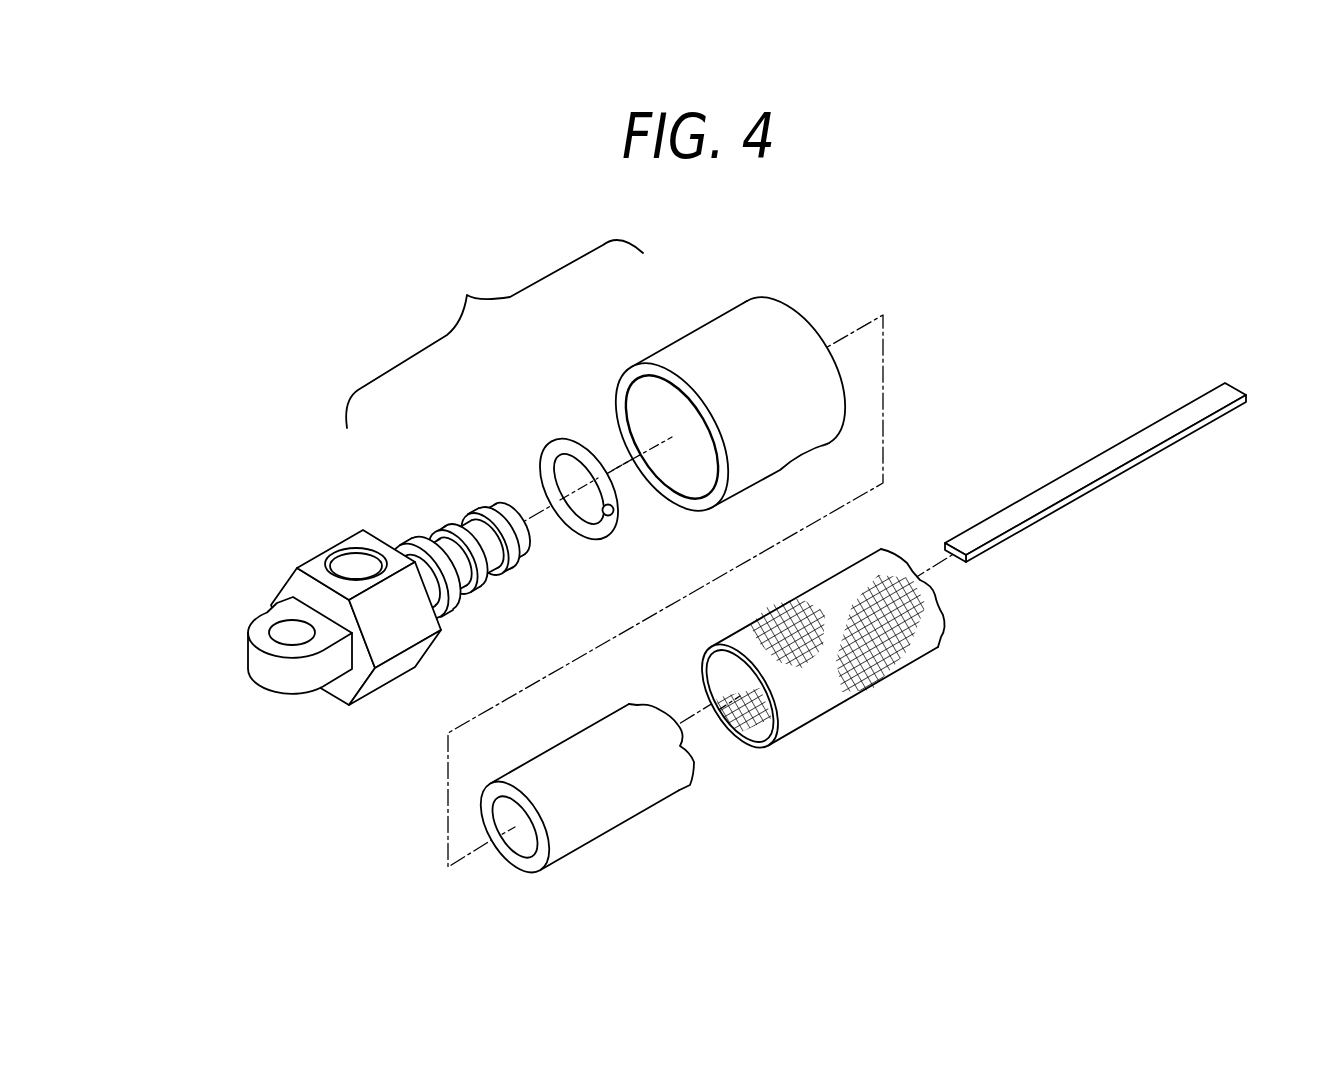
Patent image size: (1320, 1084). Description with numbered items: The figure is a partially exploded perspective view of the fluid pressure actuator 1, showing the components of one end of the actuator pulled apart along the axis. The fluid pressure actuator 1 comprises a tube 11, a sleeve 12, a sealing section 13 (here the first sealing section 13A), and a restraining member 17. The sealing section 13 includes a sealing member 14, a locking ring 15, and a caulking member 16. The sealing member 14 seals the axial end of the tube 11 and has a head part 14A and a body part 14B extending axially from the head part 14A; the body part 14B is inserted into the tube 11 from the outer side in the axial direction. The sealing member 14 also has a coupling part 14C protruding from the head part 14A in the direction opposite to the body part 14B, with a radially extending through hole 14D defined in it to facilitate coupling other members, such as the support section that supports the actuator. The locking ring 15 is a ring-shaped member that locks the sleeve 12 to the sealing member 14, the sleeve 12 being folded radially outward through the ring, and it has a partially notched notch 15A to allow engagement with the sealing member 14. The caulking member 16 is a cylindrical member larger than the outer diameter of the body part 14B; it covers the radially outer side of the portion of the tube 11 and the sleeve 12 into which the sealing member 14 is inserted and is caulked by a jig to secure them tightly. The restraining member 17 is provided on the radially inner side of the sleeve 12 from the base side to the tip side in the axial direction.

The fluid pressure actuator 1 is at (702, 566).
The tube 11 is at (638, 805).
The sleeve 12 is at (838, 700).
The sealing section 13 is at (494, 334).
The first sealing section 13A is at (494, 334).
The sealing member 14 is at (348, 583).
The head part 14A is at (388, 633).
The body part 14B is at (478, 580).
The coupling part 14C is at (268, 669).
The through hole 14D is at (350, 571).
The locking ring 15 is at (599, 461).
The notch 15A is at (617, 508).
The caulking member 16 is at (704, 338).
The restraining member 17 is at (1070, 473).